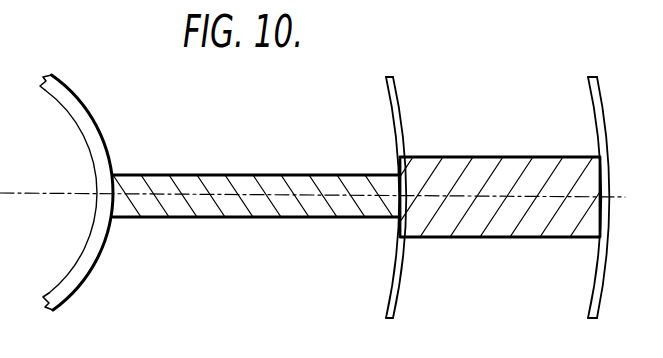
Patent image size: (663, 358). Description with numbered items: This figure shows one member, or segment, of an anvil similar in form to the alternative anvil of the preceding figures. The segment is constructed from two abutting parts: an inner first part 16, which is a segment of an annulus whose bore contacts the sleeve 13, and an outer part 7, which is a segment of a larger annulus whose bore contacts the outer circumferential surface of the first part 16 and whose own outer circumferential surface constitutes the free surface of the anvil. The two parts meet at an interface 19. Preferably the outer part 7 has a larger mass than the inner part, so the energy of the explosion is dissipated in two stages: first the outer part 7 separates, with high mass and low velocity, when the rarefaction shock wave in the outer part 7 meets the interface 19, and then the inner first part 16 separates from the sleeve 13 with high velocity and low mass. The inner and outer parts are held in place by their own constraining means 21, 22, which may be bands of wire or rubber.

The sleeve 13 is at (80, 116).
The first part 16 is at (228, 175).
The outer part 7 is at (502, 157).
The interface 19 is at (400, 232).
The constraining means 21 is at (393, 89).
The constraining means 22 is at (588, 90).